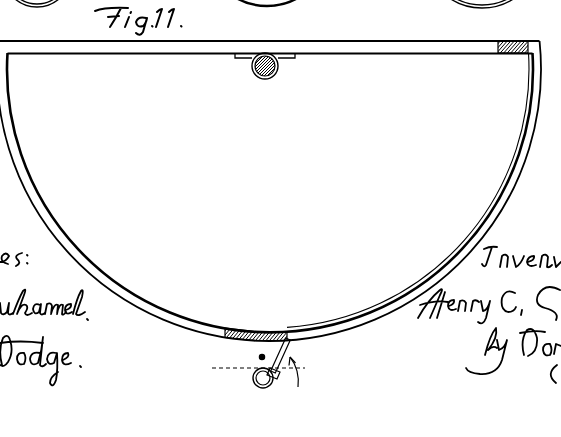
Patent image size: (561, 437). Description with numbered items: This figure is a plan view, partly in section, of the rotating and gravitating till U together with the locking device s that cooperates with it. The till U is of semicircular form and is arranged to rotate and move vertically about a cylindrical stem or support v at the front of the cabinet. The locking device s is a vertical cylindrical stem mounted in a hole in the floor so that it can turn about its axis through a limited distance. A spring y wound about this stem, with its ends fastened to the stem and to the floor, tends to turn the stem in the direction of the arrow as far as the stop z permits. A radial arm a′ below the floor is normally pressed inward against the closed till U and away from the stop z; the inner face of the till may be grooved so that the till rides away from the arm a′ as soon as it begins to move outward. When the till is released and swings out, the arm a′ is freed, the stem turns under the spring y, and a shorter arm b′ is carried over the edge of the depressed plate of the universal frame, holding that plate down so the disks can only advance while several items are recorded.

The till U is at (274, 191).
The cylindrical stem or support v is at (255, 75).
The locking device s is at (263, 370).
The stop z is at (259, 355).
The radial arm a′ is at (290, 348).
The spring y is at (253, 380).
The shorter arm b′ is at (304, 375).